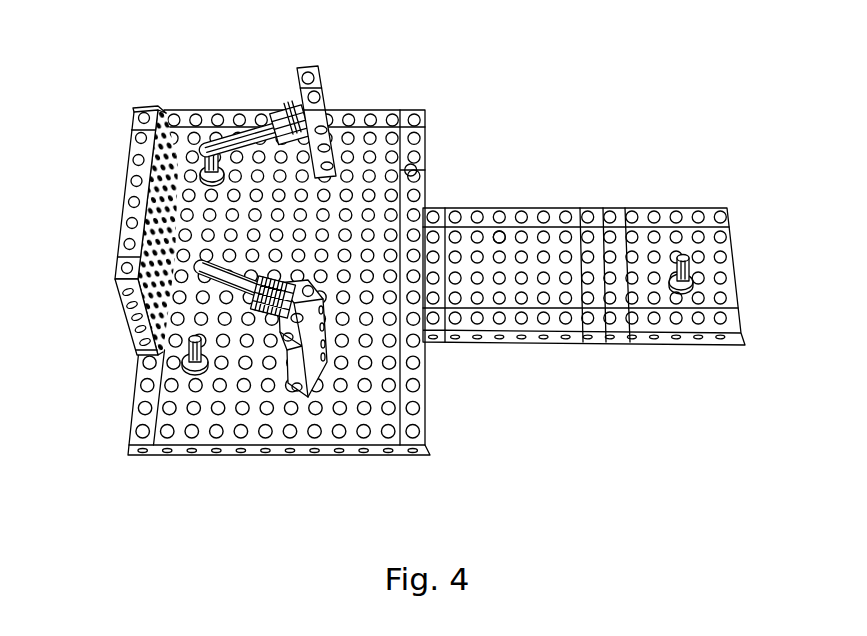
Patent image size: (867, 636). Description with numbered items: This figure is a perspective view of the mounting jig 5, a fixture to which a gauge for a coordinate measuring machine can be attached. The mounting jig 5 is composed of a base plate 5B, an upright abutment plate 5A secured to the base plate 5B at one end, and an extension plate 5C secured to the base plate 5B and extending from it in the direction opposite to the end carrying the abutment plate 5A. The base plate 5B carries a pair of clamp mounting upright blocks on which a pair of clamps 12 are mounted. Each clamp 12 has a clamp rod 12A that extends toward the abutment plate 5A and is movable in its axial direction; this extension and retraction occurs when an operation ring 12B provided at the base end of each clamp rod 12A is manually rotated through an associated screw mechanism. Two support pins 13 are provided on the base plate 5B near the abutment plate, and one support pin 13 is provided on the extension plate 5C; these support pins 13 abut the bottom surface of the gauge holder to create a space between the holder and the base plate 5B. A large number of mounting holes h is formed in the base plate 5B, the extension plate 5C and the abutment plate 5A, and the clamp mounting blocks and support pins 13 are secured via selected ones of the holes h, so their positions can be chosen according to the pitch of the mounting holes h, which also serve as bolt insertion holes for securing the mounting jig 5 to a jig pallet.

The mounting jig 5 is at (392, 278).
The abutment plate 5A is at (118, 213).
The base plate 5B is at (425, 145).
The extension plate 5C is at (687, 215).
The clamp 12 is at (190, 268).
The clamp rod 12A is at (230, 140).
The operation ring 12B is at (266, 112).
The support pin 13 is at (205, 162).
The mounting hole h is at (505, 233).